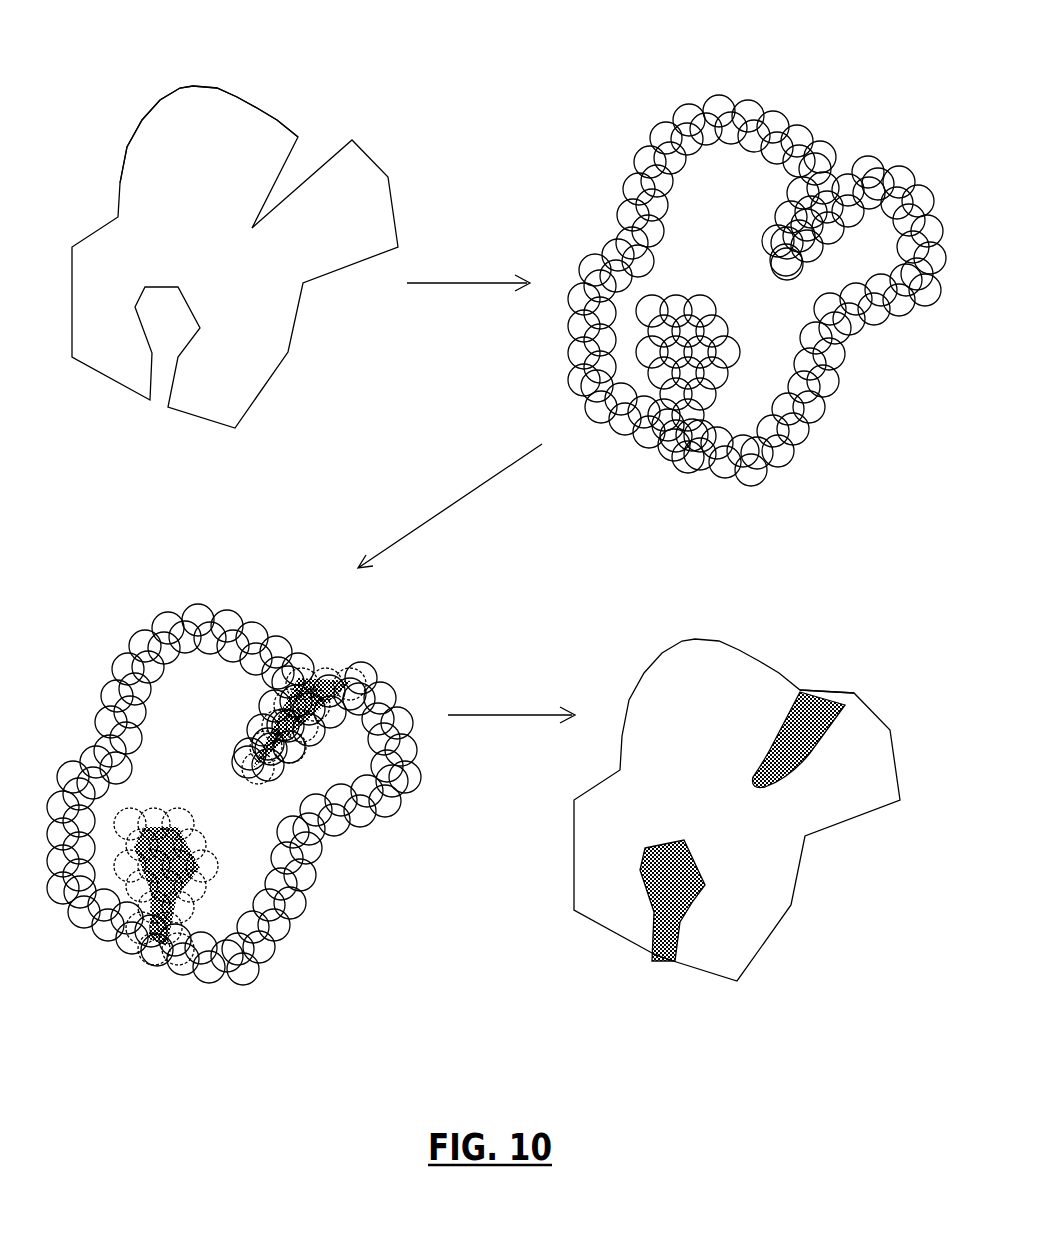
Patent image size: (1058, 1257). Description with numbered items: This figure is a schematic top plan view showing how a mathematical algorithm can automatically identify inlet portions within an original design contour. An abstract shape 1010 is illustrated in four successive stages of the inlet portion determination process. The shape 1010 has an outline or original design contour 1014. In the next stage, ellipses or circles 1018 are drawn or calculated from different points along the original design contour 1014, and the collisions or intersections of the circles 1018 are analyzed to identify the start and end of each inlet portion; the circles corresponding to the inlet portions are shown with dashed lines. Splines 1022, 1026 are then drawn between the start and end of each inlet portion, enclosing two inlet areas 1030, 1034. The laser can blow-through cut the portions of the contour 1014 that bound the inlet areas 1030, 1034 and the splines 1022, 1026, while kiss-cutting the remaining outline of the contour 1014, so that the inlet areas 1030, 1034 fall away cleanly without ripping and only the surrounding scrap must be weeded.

The abstract shape 1010 is at (180, 117).
The original design contour 1014 is at (258, 100).
The ellipses or circles 1018 is at (695, 96).
The spline 1022 is at (820, 695).
The spline 1026 is at (661, 962).
The inlet area 1030 is at (797, 742).
The inlet area 1034 is at (684, 886).